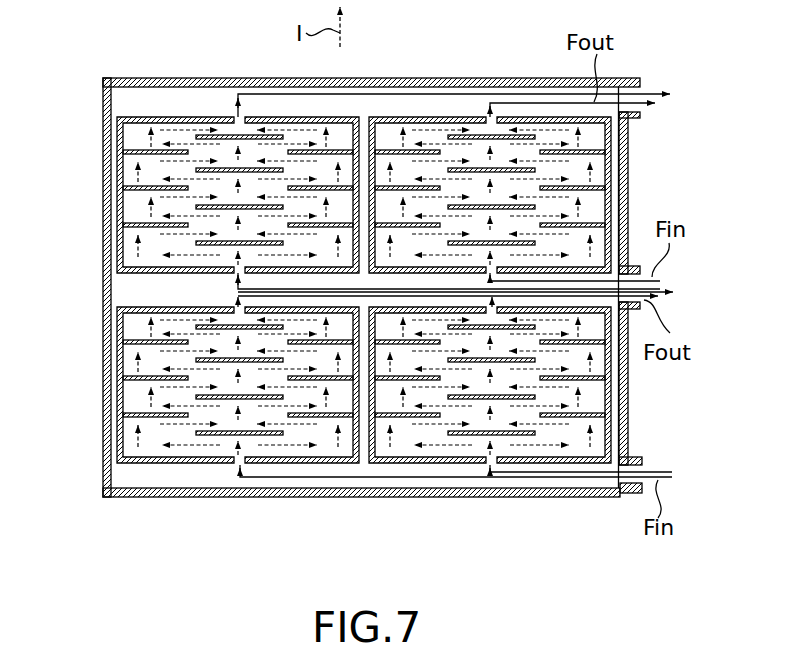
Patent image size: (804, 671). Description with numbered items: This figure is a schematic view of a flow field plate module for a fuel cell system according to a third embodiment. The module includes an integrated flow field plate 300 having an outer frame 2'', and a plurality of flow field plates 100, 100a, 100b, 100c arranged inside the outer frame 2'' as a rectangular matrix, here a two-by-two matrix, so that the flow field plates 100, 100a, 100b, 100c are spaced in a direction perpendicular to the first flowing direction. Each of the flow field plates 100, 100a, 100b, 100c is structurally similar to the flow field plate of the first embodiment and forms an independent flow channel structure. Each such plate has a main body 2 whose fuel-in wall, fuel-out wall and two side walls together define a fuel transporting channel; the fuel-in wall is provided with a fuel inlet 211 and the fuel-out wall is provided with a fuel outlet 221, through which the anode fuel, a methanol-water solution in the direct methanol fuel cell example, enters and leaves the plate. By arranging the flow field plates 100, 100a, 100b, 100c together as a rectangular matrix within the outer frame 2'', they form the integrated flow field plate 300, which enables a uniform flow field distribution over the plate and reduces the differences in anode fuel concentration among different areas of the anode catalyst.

The main body 2 is at (383, 287).
The outer frame 2'' is at (76, 287).
The integrated flow field plate 300 is at (638, 174).
The flow field plate 100 is at (157, 112).
The flow field plate 100a is at (415, 112).
The flow field plate 100b is at (176, 470).
The flow field plate 100c is at (421, 470).
The fuel outlet 221 is at (232, 115).
The fuel inlet 211 is at (238, 282).